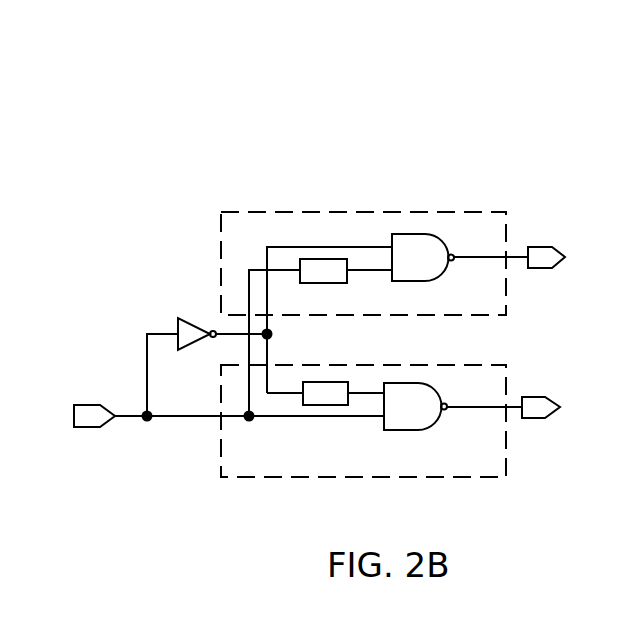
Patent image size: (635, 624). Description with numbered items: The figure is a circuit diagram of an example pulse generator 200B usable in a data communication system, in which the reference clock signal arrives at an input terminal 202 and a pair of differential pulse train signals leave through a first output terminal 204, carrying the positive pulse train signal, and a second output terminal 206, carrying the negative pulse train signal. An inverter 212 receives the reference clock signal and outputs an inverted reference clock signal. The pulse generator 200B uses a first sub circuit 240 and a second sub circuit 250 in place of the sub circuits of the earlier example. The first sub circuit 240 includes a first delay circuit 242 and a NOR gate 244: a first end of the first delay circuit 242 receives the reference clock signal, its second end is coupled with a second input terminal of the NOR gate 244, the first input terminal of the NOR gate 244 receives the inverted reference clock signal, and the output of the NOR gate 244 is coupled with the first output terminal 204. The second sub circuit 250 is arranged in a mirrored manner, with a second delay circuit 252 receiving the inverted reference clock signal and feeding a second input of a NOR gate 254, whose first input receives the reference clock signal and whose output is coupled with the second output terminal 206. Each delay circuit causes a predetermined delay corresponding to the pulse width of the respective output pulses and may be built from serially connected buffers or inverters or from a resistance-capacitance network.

The pulse generator 200B is at (548, 128).
The input terminal 202 is at (90, 411).
The first output terminal 204 is at (553, 262).
The second output terminal 206 is at (547, 413).
The inverter 212 is at (189, 317).
The first sub circuit 240 is at (406, 246).
The first delay circuit 242 is at (321, 268).
The NOR gate 244 is at (420, 250).
The second sub circuit 250 is at (401, 440).
The second delay circuit 252 is at (343, 400).
The NOR gate 254 is at (413, 417).